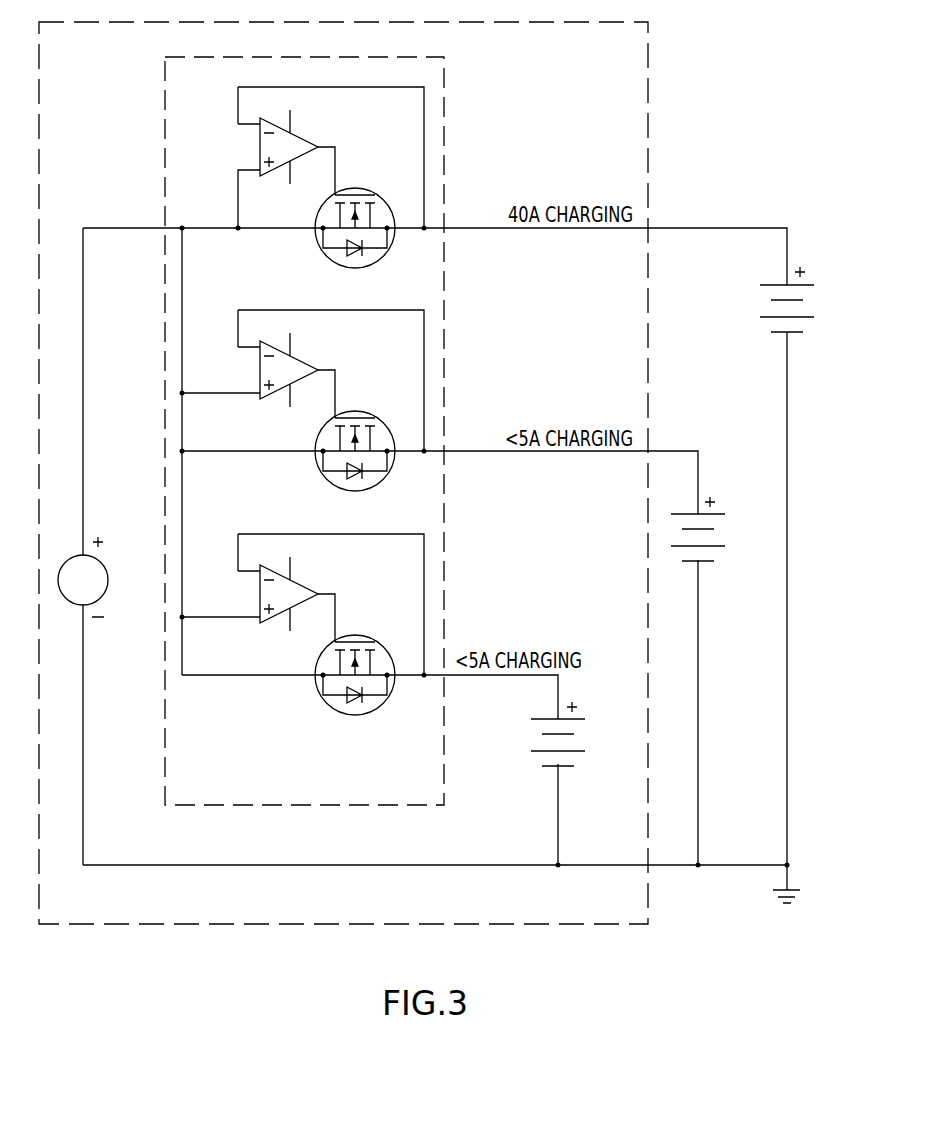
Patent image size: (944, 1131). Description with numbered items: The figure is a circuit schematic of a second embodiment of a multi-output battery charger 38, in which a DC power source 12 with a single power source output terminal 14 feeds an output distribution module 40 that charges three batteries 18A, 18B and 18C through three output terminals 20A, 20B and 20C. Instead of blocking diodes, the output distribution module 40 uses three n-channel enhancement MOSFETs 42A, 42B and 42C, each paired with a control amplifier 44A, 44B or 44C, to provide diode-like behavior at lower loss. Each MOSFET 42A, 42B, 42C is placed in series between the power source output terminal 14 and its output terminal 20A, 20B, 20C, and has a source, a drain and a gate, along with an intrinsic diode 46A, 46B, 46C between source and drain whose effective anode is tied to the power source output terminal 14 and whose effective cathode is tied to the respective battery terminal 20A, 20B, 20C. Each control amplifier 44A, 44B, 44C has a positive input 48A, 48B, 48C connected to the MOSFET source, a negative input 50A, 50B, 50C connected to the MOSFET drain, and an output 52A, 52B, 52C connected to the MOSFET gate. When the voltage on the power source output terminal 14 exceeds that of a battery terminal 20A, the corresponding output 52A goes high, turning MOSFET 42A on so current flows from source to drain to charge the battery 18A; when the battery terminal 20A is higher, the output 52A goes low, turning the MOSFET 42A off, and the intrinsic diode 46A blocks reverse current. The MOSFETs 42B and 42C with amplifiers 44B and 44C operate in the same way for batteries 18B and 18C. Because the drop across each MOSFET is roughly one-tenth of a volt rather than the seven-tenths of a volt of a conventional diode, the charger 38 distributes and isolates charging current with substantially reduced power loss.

The DC power source 12 is at (66, 561).
The power source output terminal 14 is at (128, 227).
The battery 18A is at (797, 333).
The battery 18B is at (707, 561).
The battery 18C is at (567, 766).
The output terminal 20A is at (788, 255).
The output terminal 20B is at (700, 485).
The output terminal 20C is at (560, 690).
The multi-output battery charger 38 is at (140, 924).
The output distribution module 40 is at (300, 806).
The MOSFET 42A is at (360, 190).
The MOSFET 42B is at (359, 434).
The MOSFET 42C is at (360, 658).
The control amplifier 44A is at (284, 147).
The control amplifier 44B is at (307, 364).
The control amplifier 44C is at (308, 588).
The intrinsic diode 46A is at (330, 257).
The intrinsic diode 46B is at (324, 471).
The intrinsic diode 46C is at (324, 695).
The positive input 48A is at (250, 165).
The positive input 48B is at (224, 413).
The positive input 48C is at (224, 637).
The negative input 50A is at (250, 128).
The negative input 50B is at (307, 380).
The negative input 50C is at (307, 604).
The output 52A is at (327, 146).
The output 52B is at (355, 383).
The output 52C is at (355, 607).